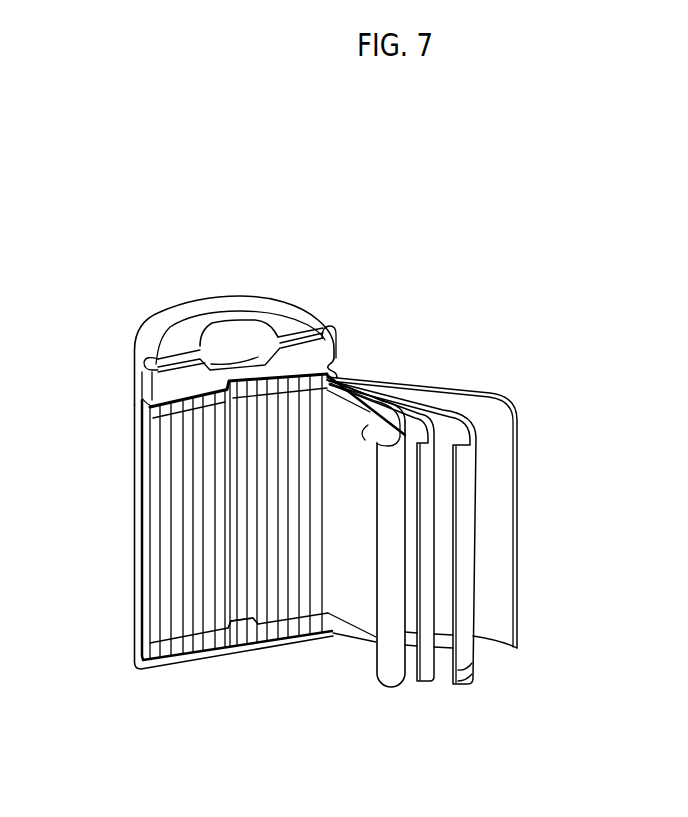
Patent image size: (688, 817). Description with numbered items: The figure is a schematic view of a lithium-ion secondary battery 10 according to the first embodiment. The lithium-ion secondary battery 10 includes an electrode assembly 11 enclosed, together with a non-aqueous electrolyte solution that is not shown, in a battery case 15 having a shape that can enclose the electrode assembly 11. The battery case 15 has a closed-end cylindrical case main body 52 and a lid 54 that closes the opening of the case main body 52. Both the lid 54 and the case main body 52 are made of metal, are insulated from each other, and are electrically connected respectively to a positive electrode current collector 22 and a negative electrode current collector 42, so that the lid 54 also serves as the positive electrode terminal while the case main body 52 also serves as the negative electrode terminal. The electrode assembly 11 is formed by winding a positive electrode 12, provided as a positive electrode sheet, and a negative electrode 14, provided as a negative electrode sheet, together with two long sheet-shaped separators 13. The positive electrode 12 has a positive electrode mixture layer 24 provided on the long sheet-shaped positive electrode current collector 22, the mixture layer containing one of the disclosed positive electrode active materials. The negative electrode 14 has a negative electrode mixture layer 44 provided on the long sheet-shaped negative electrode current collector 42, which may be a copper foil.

The lithium-ion secondary battery 10 is at (380, 271).
The electrode assembly 11 is at (158, 566).
The positive electrode 12 is at (378, 691).
The separator 13 is at (483, 392).
The negative electrode 14 is at (463, 690).
The battery case 15 is at (142, 491).
The positive electrode current collector 22 is at (358, 388).
The positive electrode mixture layer 24 is at (403, 391).
The negative electrode current collector 42 is at (471, 676).
The negative electrode mixture layer 44 is at (472, 655).
The case main body 52 is at (235, 650).
The lid 54 is at (245, 325).